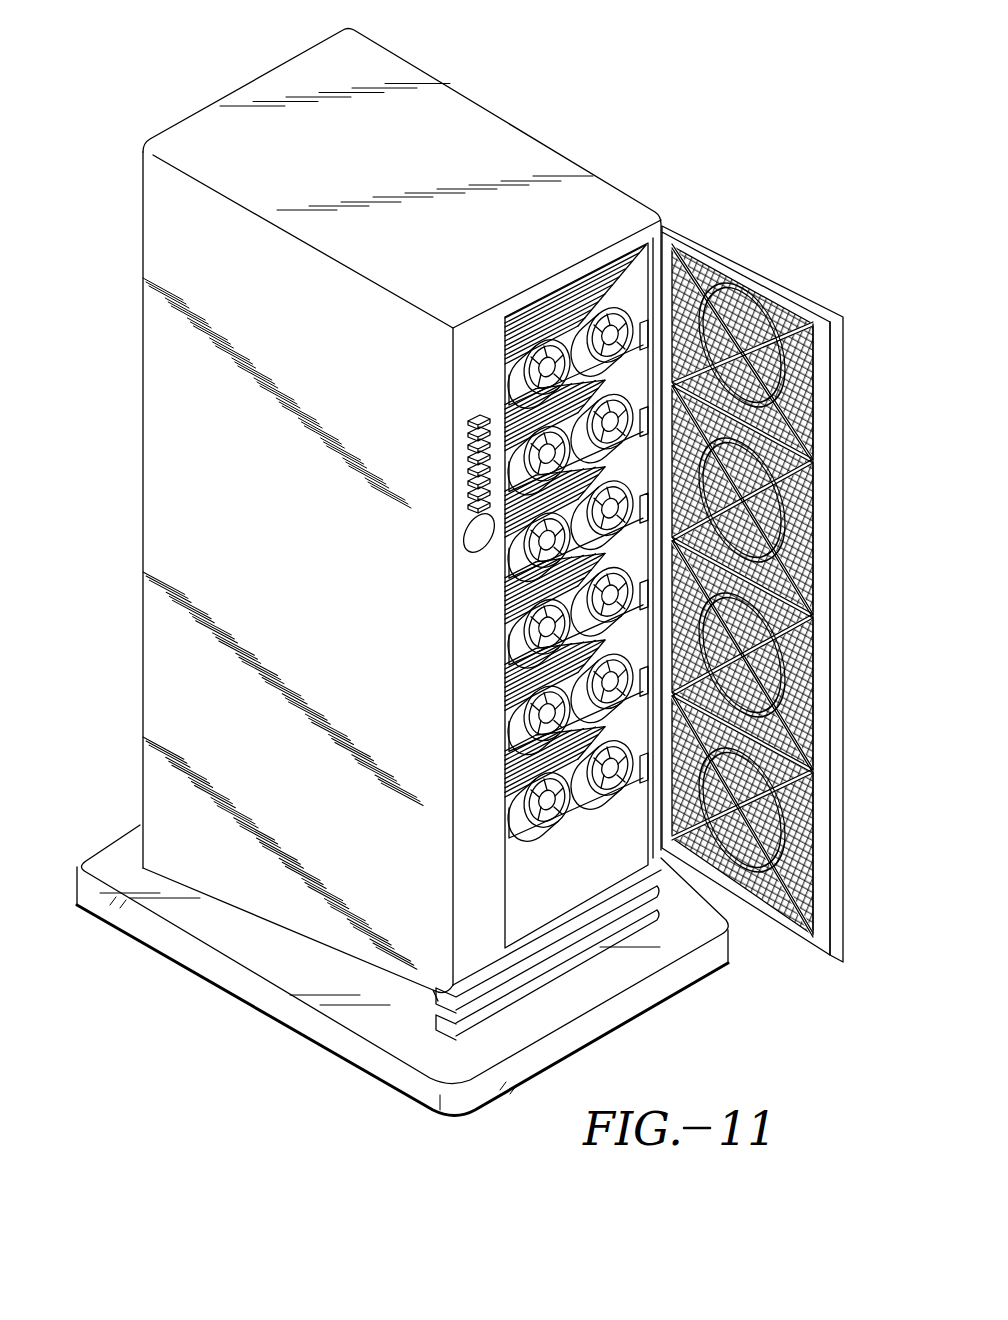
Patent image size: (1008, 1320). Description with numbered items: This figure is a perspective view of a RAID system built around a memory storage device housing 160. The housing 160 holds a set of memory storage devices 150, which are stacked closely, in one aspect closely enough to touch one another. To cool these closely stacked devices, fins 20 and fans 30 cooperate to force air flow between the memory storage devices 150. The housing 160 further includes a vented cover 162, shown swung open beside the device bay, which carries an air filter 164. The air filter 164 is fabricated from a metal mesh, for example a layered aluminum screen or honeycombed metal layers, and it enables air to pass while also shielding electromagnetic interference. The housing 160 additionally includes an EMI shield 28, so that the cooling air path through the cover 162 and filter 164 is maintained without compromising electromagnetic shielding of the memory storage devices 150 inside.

The memory storage device housing 160 is at (556, 110).
The fins 20 is at (605, 290).
The fans 30 is at (632, 308).
The memory storage devices 150 is at (553, 500).
The vented cover 162 is at (807, 302).
The air filter 164 is at (727, 282).
The EMI shield 28 is at (820, 408).